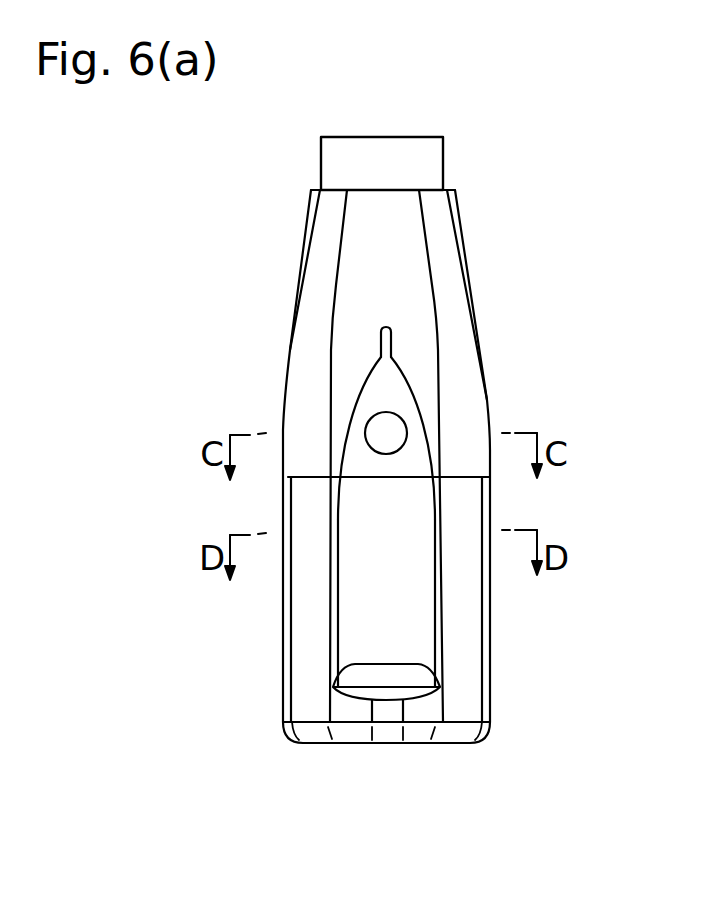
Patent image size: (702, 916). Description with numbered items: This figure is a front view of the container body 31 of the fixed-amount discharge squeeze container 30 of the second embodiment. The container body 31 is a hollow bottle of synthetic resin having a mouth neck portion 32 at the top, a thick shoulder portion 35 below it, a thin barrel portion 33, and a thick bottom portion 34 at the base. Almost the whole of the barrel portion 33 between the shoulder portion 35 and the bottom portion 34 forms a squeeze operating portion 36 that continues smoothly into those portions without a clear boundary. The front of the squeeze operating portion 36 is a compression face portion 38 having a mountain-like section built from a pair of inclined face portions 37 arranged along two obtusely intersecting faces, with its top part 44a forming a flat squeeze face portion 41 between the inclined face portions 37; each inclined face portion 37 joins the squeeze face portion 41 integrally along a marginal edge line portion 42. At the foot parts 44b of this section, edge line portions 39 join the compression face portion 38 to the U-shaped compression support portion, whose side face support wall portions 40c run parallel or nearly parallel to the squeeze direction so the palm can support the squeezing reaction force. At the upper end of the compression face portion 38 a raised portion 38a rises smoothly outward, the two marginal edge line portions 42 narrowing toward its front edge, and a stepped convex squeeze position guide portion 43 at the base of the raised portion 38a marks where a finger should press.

The fixed-amount discharge squeeze container 30 is at (298, 186).
The container body 31 is at (471, 245).
The mouth neck portion 32 is at (418, 167).
The barrel portion 33 is at (464, 348).
The bottom portion 34 is at (453, 740).
The shoulder portion 35 is at (318, 242).
The squeeze operating portion 36 is at (407, 508).
The inclined face portion 37 is at (302, 608).
The compression face portion 38 is at (353, 552).
The raised portion 38a is at (383, 369).
The edge line portion 39 is at (287, 680).
The side face support wall portion 40c is at (285, 517).
The squeeze face portion 41 is at (360, 495).
The marginal edge line portion 42 is at (332, 627).
The squeeze position guide portion 43 is at (390, 433).
The top part 44a is at (302, 549).
The foot part 44b is at (362, 655).